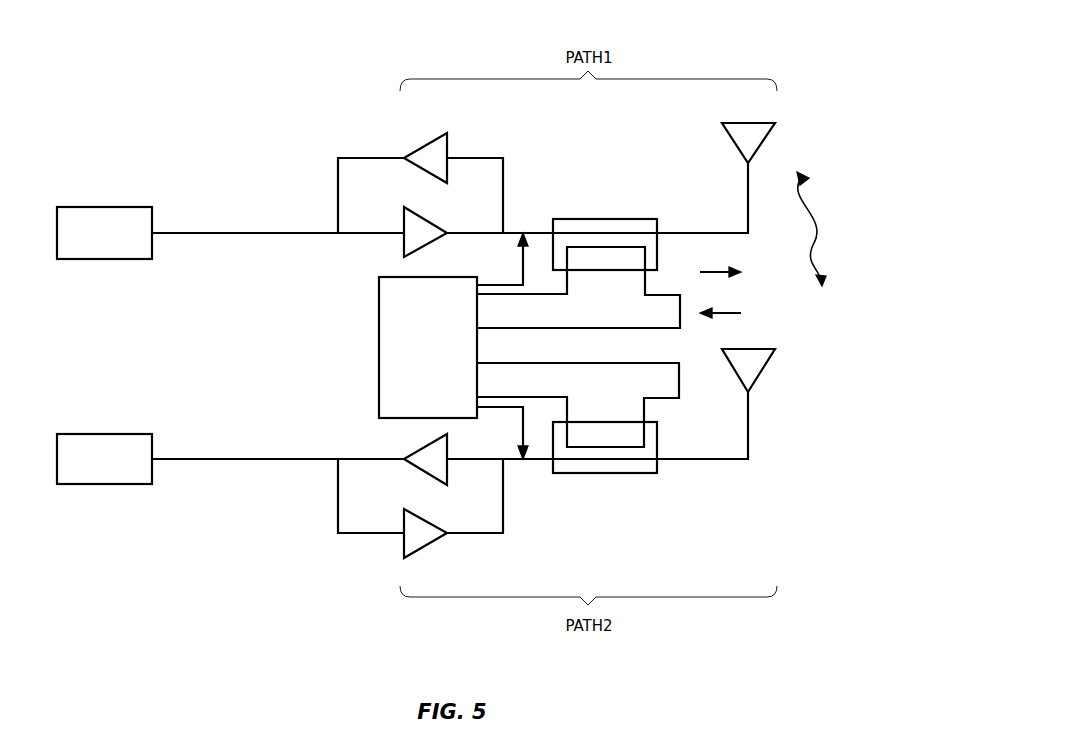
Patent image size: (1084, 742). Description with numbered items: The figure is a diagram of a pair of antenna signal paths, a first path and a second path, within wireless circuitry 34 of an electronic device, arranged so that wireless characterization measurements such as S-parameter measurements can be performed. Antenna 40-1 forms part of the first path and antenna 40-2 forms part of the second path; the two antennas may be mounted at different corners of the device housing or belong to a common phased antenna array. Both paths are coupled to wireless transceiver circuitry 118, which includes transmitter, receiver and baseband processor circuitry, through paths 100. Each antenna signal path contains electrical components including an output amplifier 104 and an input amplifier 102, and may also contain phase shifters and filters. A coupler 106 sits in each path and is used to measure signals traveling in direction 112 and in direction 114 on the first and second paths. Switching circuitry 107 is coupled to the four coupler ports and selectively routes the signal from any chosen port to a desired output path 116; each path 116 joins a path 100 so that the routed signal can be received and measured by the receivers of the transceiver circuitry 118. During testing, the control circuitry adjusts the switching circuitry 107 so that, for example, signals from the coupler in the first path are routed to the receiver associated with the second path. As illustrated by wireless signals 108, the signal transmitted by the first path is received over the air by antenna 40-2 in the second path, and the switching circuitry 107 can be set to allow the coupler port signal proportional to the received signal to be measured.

The wireless circuitry 34 is at (834, 63).
The wireless transceiver circuitry 118 is at (108, 207).
The paths 100 is at (216, 236).
The input amplifiers 102 is at (428, 145).
The output amplifiers 104 is at (426, 248).
The couplers 106 is at (592, 218).
The switching circuitry 107 is at (372, 335).
The output paths 116 is at (530, 257).
The antenna 40-1 is at (773, 129).
The antenna 40-2 is at (770, 361).
The wireless signals 108 is at (824, 241).
The direction 112 is at (722, 279).
The direction 114 is at (722, 319).